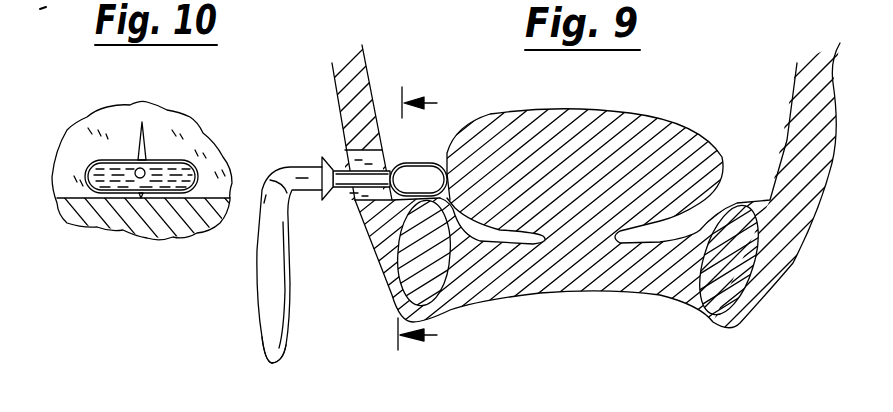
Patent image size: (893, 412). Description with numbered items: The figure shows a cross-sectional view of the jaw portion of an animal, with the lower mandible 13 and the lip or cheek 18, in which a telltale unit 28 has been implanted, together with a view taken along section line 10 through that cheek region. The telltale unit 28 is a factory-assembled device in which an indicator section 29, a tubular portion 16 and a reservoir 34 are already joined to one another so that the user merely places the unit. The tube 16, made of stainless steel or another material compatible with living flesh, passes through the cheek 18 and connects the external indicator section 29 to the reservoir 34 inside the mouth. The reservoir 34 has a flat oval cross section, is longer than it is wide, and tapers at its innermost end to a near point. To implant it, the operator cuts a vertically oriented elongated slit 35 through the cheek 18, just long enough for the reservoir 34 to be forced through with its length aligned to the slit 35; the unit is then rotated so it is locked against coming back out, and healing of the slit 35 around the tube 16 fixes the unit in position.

In FIG. 9, the section line 10— 10 is at (406, 218).
In FIG. 9, the lower mandible 13 is at (437, 305).
In FIG. 10, the tubular portion 16 is at (113, 168).
In FIG. 9, the tubular portion 16 is at (357, 205).
In FIG. 9, the lip 18 is at (340, 112).
In FIG. 9, the telltale unit 28 is at (248, 265).
In FIG. 9, the indicator section 29 is at (262, 333).
In FIG. 10, the reservoir 34 is at (190, 160).
In FIG. 9, the reservoir 34 is at (404, 165).
In FIG. 10, the elongated slit 35 is at (145, 148).
In FIG. 9, the elongated slit 35 is at (345, 157).